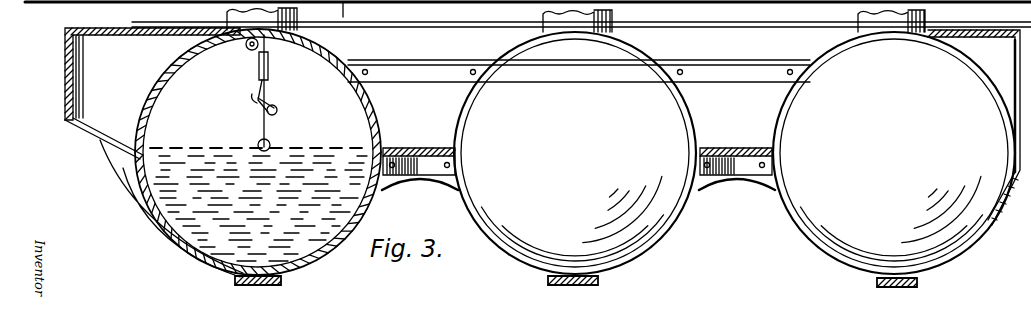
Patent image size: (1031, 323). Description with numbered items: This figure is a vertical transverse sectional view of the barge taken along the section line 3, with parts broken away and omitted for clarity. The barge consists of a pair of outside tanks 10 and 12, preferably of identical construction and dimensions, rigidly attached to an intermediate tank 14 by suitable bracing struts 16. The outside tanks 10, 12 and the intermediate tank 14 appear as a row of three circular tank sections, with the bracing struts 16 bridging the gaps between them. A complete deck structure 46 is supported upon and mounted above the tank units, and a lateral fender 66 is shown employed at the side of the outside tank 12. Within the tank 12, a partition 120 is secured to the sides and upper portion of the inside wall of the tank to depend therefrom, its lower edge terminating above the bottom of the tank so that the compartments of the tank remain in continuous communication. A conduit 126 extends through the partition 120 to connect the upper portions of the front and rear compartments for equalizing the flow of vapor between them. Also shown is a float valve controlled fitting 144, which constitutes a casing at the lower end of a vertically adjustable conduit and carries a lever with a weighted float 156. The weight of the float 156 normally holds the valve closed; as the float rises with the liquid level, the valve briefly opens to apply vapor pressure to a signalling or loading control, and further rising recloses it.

The section line 3 is at (360, 14).
The outside tank 10 is at (813, 247).
The outside tank 12 is at (212, 267).
The intermediate tank 14 is at (635, 262).
The bracing struts 16 is at (407, 62).
The deck structure 46 is at (970, 32).
The lateral fender 66 is at (66, 60).
The partition 120 is at (178, 97).
The conduit 126 is at (248, 50).
The float valve controlled fitting 144 is at (270, 68).
The weighted float 156 is at (278, 108).